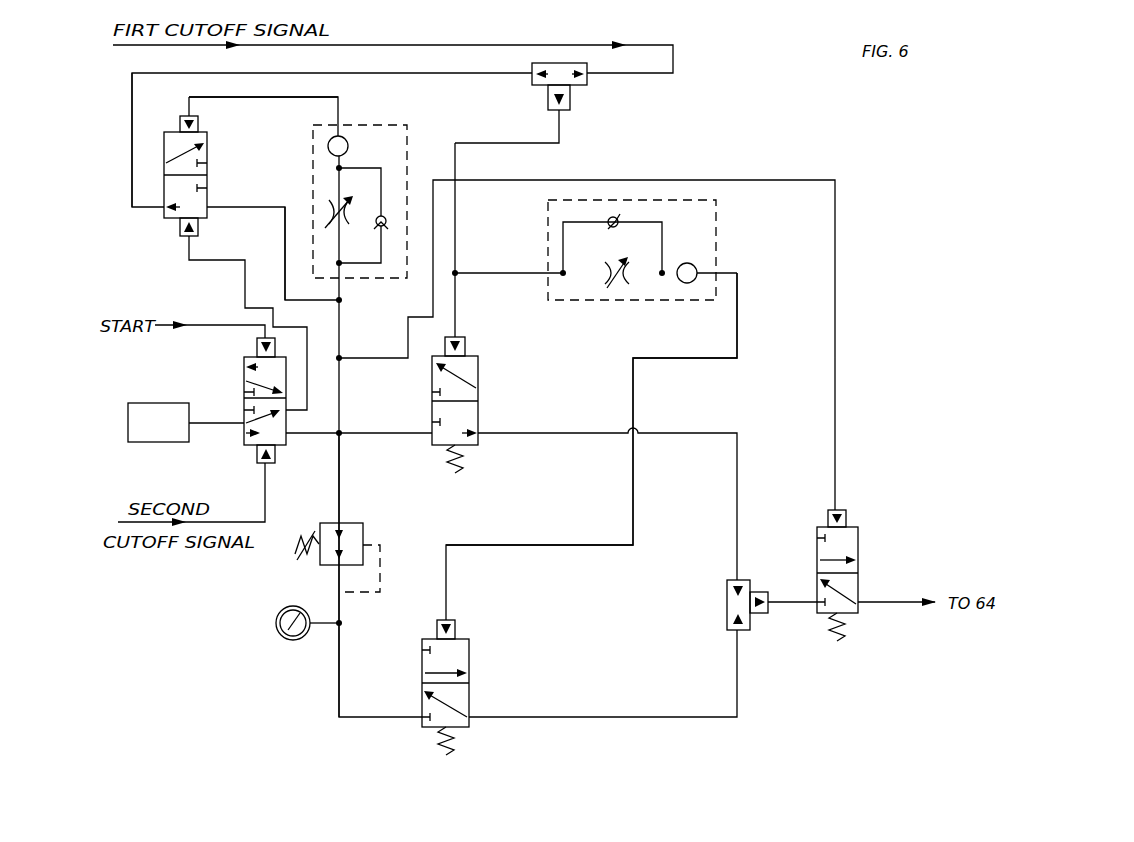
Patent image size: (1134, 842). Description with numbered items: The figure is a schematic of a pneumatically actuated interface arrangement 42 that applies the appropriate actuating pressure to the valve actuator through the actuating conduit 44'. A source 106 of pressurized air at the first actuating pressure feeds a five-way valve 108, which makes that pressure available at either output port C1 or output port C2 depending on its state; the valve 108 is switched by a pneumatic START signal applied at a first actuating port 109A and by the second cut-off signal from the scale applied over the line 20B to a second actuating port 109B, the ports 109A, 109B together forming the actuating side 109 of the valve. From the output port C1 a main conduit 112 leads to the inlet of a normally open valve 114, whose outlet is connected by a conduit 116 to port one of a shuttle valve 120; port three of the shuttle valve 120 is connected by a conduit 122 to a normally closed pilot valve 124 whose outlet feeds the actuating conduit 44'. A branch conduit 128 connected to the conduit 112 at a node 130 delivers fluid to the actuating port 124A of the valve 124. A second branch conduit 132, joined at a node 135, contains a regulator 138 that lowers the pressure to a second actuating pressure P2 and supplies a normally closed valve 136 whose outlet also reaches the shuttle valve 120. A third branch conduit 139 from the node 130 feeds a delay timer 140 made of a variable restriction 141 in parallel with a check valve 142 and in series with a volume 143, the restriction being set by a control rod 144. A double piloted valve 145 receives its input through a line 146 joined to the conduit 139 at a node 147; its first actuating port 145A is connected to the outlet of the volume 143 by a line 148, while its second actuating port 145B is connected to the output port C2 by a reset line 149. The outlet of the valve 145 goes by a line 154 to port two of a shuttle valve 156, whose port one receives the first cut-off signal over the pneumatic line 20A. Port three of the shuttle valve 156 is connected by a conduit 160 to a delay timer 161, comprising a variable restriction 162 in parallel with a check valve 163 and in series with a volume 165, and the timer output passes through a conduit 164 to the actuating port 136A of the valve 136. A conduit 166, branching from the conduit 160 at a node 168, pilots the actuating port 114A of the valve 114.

The pneumatic line 20A is at (466, 44).
The line 20B is at (263, 532).
The interface arrangement 42 is at (857, 196).
The actuating conduit 44' is at (902, 637).
The source of pressurized actuating fluid 106 is at (156, 445).
The five-way valve 108 is at (257, 434).
The start valve 109 is at (265, 401).
The first actuating port 109A is at (256, 346).
The second actuating port 109B is at (285, 470).
The main conduit 112 is at (362, 433).
The normally open valve 114 is at (480, 412).
The actuating port 114A is at (466, 346).
The conduit 116 is at (548, 433).
The shuttle valve 120 is at (727, 611).
The conduit 122 is at (787, 600).
The normally closed pilot valve 124 is at (860, 576).
The actuating port 124A is at (848, 520).
The branch conduit 128 is at (408, 328).
The node 130 is at (341, 362).
The second branch conduit 132 is at (342, 500).
The node 135 is at (341, 438).
The normally closed valve 136 is at (472, 700).
The actuating port 136A is at (458, 629).
The regulator 138 is at (381, 531).
The third branch conduit 139 is at (341, 297).
The delay timer 140 is at (365, 125).
The variable restriction 141 is at (331, 205).
The check valve 142 is at (385, 215).
The volume 143 is at (349, 146).
The control rod 144 is at (330, 226).
The double piloted valve 145 is at (164, 220).
The first actuating port 145A is at (177, 118).
The second actuating port 145B is at (181, 238).
The line 146 is at (285, 220).
The node 147 is at (339, 302).
The line 148 is at (291, 99).
The reset line 149 is at (245, 292).
The line 154 is at (307, 72).
The shuttle valve 156 is at (582, 88).
The conduit 160 is at (512, 142).
The delay timer 161 is at (717, 208).
The variable restriction 162 is at (620, 283).
The check valve 163 is at (610, 218).
The conduit 164 is at (739, 331).
The volume 165 is at (696, 266).
The conduit 166 is at (457, 313).
The node 168 is at (456, 272).
The output port C1 is at (278, 452).
The output port C2 is at (320, 418).
The second actuating pressure P2 is at (286, 639).